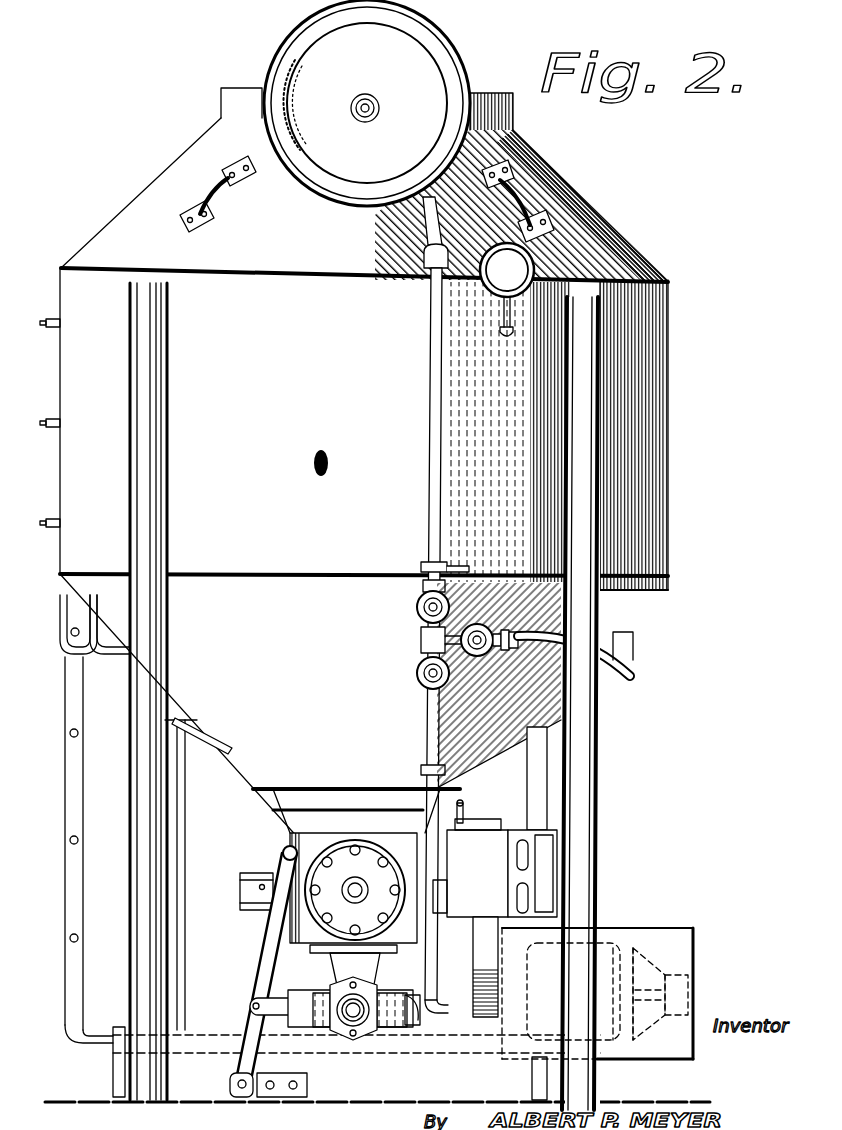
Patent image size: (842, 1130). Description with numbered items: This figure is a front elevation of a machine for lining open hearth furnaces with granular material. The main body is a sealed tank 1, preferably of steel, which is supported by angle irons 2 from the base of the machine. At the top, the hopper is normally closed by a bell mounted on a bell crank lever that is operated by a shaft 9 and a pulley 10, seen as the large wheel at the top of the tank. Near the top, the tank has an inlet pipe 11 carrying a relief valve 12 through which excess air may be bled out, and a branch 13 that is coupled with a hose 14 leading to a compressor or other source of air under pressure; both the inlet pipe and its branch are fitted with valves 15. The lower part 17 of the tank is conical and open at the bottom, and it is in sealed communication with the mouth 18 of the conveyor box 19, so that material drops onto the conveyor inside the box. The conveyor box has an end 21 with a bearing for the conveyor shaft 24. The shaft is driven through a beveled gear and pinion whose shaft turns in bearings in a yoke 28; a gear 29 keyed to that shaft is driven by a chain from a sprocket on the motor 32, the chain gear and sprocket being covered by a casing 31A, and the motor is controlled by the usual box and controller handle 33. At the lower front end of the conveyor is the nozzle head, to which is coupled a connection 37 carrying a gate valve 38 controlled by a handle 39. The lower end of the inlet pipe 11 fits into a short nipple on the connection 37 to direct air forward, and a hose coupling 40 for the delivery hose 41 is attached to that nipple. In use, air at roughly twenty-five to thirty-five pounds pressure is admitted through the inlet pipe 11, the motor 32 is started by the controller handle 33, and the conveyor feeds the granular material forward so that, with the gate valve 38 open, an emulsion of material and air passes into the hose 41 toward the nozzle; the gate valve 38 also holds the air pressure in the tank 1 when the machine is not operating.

The sealed tank 1 is at (650, 328).
The angle irons 2 is at (585, 737).
The shaft 9 is at (362, 114).
The pulley 10 is at (322, 68).
The inlet pipe 11 is at (428, 418).
The relief valve 12 is at (420, 572).
The branch 13 is at (481, 624).
The hose 14 is at (634, 671).
The valves 15 is at (418, 612).
The lower part of the tank 17 is at (310, 707).
The mouth of the conveyor box 18 is at (292, 818).
The conveyor box 19 is at (312, 842).
The conveyor box end 21 is at (343, 848).
The conveyor shaft 24 is at (348, 888).
The yoke 28 is at (252, 890).
The gear 29 is at (420, 862).
The casing 31A is at (490, 936).
The motor 32 is at (597, 960).
The controller handle 33 is at (466, 808).
The connection 37 is at (250, 1005).
The gate valve 38 is at (303, 1022).
The handle 39 is at (262, 957).
The hose coupling 40 is at (342, 1040).
The hose 41 is at (378, 1027).